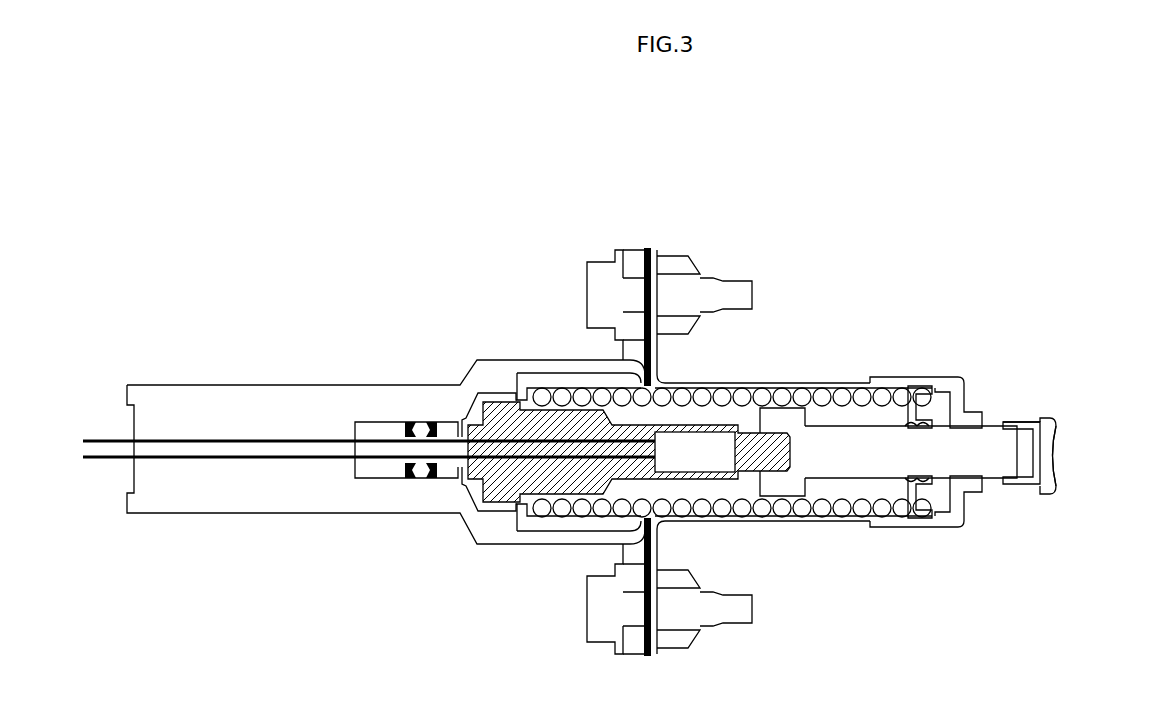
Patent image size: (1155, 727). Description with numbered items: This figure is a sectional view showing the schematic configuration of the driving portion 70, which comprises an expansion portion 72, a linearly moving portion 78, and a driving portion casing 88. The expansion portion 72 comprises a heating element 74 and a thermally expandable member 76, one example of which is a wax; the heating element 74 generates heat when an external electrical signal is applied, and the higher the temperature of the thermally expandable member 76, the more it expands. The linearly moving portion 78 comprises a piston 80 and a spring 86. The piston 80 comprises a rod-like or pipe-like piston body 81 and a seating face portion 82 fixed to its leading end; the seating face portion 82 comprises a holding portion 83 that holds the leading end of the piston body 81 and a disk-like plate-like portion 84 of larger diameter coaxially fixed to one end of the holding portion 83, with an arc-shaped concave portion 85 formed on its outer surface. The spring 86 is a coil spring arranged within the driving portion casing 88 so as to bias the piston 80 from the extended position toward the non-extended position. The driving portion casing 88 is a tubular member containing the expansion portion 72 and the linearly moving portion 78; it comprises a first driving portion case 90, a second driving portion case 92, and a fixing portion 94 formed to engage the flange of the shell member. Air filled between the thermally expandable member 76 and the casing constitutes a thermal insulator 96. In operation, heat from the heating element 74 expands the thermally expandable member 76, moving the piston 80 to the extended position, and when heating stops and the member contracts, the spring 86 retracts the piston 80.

The driving portion 70 is at (616, 170).
The expansion portion 72 is at (445, 628).
The heating element 74 is at (680, 463).
The thermally expandable member 76 is at (560, 482).
The linearly moving portion 78 is at (962, 356).
The piston 80 is at (975, 648).
The piston body 81 is at (988, 458).
The seating face portion 82 is at (1038, 508).
The holding portion 83 is at (1017, 420).
The plate-like portion 84 is at (1047, 418).
The concave portion 85 is at (1064, 450).
The spring 86 is at (820, 515).
The driving portion casing 88 is at (415, 336).
The first driving portion case 90 is at (343, 385).
The second driving portion case 92 is at (822, 383).
The fixing portion 94 is at (674, 242).
The thermal insulator 96 is at (550, 380).